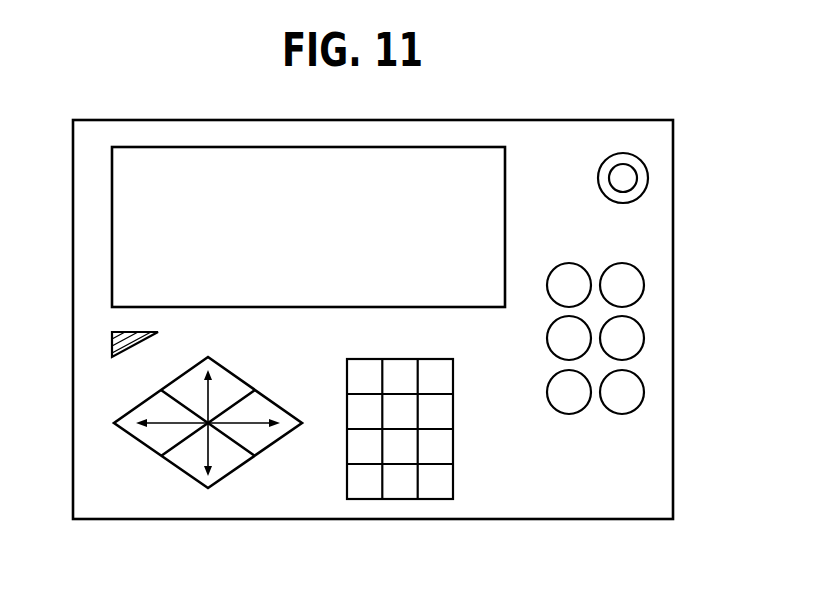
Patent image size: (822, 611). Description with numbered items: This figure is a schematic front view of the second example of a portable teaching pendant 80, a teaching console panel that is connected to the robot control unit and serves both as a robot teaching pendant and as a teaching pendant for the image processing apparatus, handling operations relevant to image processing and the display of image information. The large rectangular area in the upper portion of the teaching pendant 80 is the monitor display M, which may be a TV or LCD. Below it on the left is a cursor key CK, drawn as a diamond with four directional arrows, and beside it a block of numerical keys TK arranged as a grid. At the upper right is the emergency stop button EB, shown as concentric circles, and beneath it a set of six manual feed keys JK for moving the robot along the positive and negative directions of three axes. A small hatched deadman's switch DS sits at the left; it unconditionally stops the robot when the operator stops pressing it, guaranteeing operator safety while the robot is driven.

The teaching pendant 80 is at (452, 110).
The monitor display M is at (189, 160).
The emergency stop button EB is at (648, 175).
The manual feed key JK is at (663, 282).
The deadman's switch DS is at (100, 349).
The cursor key CK is at (242, 499).
The numerical keys TK is at (400, 511).